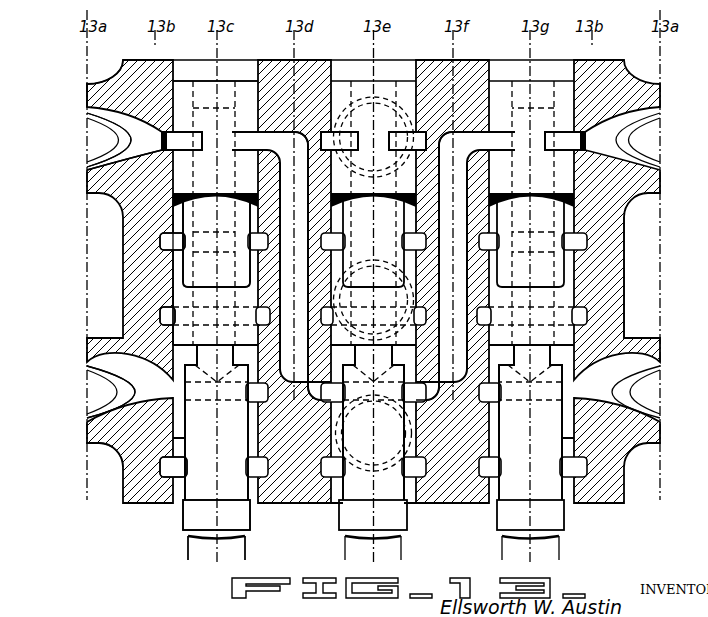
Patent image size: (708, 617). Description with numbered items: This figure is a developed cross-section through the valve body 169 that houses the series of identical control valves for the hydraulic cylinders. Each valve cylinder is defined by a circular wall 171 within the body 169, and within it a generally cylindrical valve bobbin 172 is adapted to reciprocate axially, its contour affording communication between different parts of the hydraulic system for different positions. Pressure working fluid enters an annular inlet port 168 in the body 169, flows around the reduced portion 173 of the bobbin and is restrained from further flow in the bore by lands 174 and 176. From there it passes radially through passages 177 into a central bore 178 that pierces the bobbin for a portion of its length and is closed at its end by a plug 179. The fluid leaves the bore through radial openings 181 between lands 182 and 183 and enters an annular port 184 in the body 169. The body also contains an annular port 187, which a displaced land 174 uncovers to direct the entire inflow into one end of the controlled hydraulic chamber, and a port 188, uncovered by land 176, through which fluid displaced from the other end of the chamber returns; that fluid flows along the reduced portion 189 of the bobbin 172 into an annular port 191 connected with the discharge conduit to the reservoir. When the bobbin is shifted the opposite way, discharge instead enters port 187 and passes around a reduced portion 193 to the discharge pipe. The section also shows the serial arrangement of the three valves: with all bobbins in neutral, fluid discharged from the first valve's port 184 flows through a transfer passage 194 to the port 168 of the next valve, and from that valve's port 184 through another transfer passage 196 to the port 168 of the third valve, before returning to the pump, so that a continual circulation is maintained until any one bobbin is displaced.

The inlet port 168 is at (190, 392).
The valve body 169 is at (627, 277).
The circular wall 171 is at (175, 211).
The valve bobbin 172 is at (182, 272).
The reduced portion 173 is at (113, 447).
The land 174 is at (184, 495).
The land 176 is at (178, 335).
The passages 177 is at (193, 355).
The central bore 178 is at (183, 262).
The plug 179 is at (227, 88).
The radial openings 181 is at (180, 128).
The land 182 is at (180, 162).
The land 183 is at (178, 89).
The annular port 184 is at (160, 142).
The annular port 187 is at (160, 472).
The port 188 is at (163, 313).
The reduced portion 189 is at (222, 229).
The annular port 191 is at (163, 239).
The reduced portion 193 is at (193, 547).
The transfer passage 194 is at (292, 172).
The transfer passage 196 is at (458, 190).